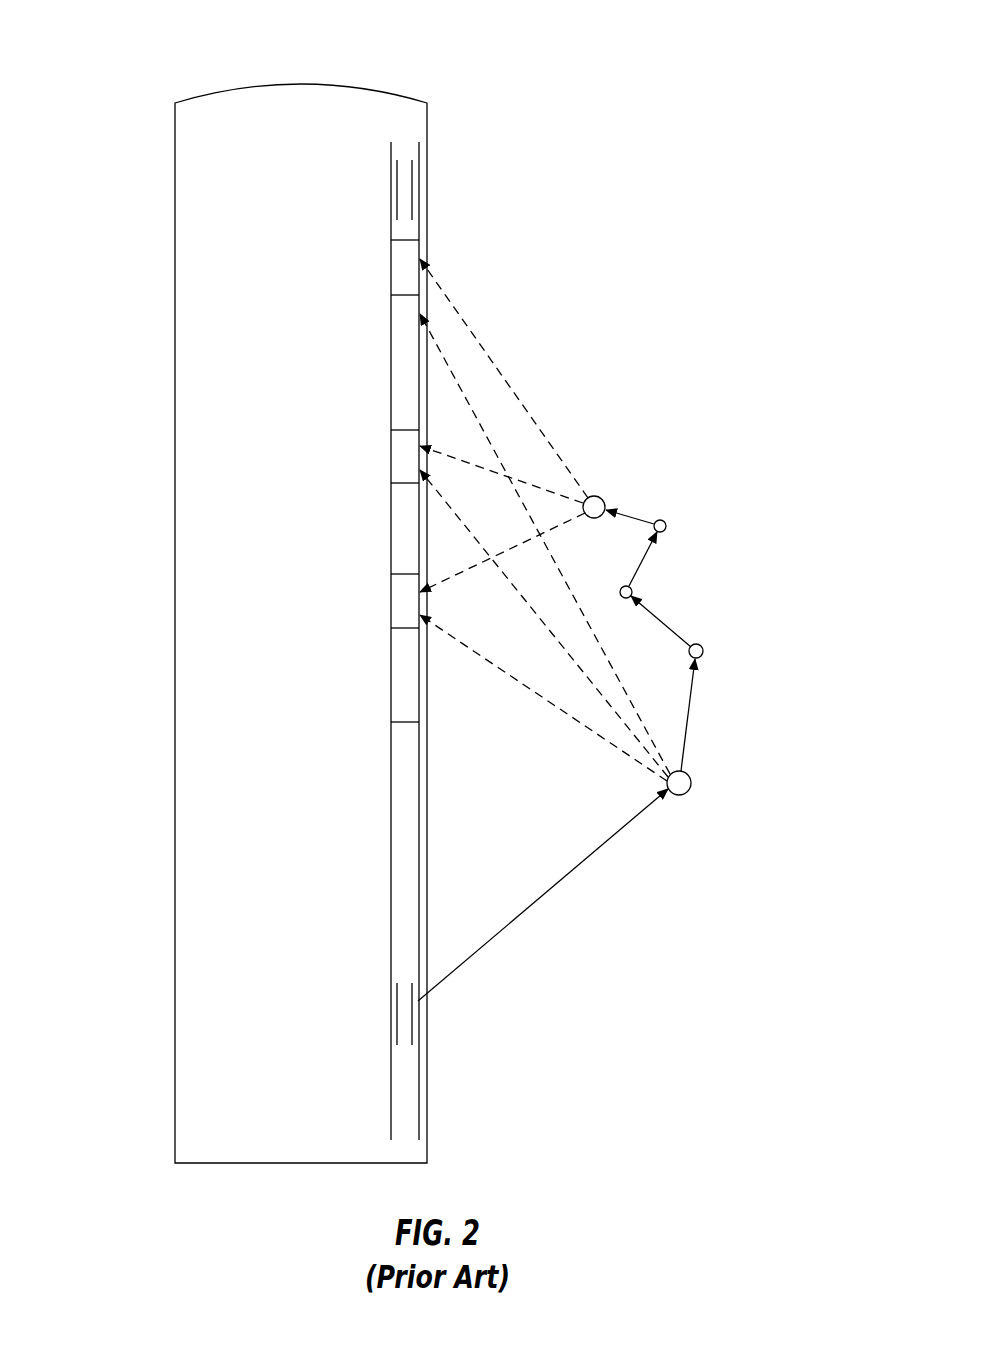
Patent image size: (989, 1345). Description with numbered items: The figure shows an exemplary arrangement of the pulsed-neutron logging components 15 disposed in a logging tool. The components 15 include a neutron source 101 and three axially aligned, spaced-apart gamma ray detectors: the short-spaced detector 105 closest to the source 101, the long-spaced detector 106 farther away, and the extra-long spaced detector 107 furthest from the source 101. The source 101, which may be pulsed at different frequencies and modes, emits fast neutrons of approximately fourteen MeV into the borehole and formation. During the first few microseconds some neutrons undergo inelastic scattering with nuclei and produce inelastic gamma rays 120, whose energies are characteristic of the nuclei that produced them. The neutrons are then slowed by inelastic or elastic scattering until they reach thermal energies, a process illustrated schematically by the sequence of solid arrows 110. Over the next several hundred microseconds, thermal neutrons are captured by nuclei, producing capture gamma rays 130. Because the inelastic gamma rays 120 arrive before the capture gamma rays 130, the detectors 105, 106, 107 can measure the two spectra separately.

The pulsed-neutron logging components 15 is at (93, 40).
The neutron source 101 is at (192, 820).
The short-spaced (SS) detector 105 is at (198, 603).
The long-spaced (LS) detector 106 is at (198, 457).
The extra-long spaced (XLS) detector 107 is at (198, 270).
The sequence of solid arrows 110 is at (645, 560).
The inelastic gamma rays 120 is at (705, 736).
The capture gamma rays 130 is at (504, 357).